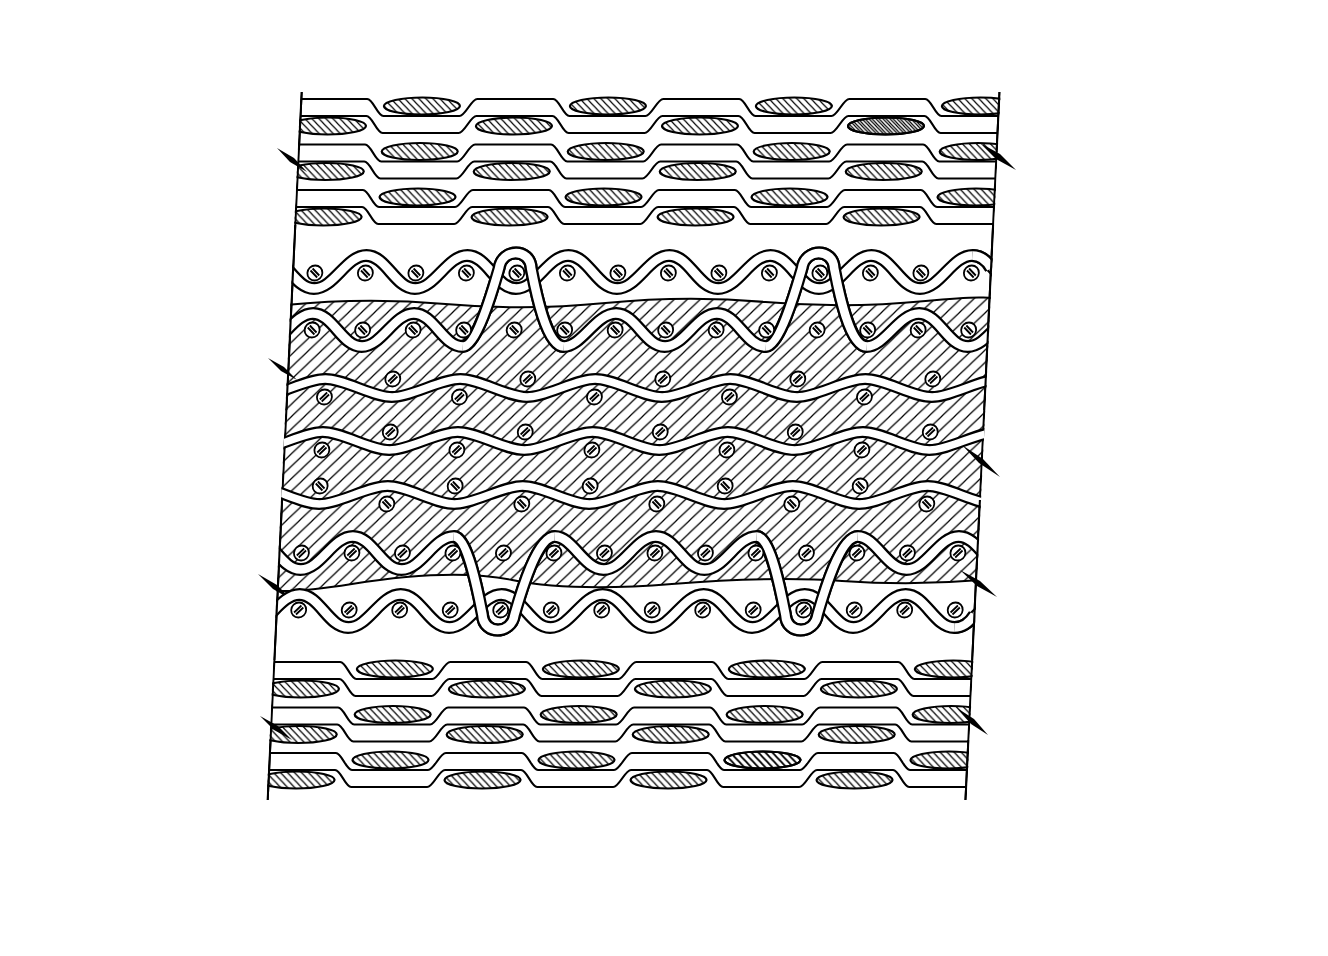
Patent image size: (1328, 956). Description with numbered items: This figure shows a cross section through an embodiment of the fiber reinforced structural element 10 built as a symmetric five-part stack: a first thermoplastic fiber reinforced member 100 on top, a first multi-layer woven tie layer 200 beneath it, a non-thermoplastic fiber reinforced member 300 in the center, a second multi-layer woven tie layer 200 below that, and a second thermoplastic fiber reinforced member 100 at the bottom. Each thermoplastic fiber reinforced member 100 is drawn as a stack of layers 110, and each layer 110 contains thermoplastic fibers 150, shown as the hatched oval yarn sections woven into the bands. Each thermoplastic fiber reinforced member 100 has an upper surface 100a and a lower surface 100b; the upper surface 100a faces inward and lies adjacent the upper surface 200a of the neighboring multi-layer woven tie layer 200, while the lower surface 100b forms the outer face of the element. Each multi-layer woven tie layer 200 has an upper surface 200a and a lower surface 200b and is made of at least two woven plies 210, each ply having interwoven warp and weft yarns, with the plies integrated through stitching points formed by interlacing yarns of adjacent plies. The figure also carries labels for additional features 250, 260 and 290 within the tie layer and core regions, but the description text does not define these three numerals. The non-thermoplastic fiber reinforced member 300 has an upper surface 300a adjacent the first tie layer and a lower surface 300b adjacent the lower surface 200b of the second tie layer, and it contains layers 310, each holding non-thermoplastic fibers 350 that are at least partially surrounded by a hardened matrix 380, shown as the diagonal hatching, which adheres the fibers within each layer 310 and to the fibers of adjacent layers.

The fiber reinforced structural element 10 is at (1232, 175).
The thermoplastic fiber reinforced member 100 is at (718, 447).
The upper surface of the thermoplastic fiber reinforced member 100a is at (283, 280).
The lower surface of the thermoplastic fiber reinforced member 100b is at (287, 95).
The layer 110 is at (1024, 85).
The thermoplastic fibers 150 is at (882, 106).
The multi-layer woven tie layer 200 is at (688, 460).
The upper surface of the multi-layer woven tie layer 200a is at (282, 288).
The lower surface of the multi-layer woven tie layer 200b is at (283, 320).
The woven ply 210 is at (1010, 250).
The yarn end 250 is at (967, 253).
The matrix boundary 260 is at (985, 413).
The tuck loop 290 is at (533, 253).
The non-thermoplastic fiber reinforced member 300 is at (689, 444).
The upper surface of the non-thermoplastic fiber reinforced member 300a is at (288, 380).
The lower surface of the non-thermoplastic fiber reinforced member 300b is at (268, 552).
The layer 310 is at (1008, 362).
The non-thermoplastic fibers 350 is at (310, 487).
The hardened matrix 380 is at (310, 413).